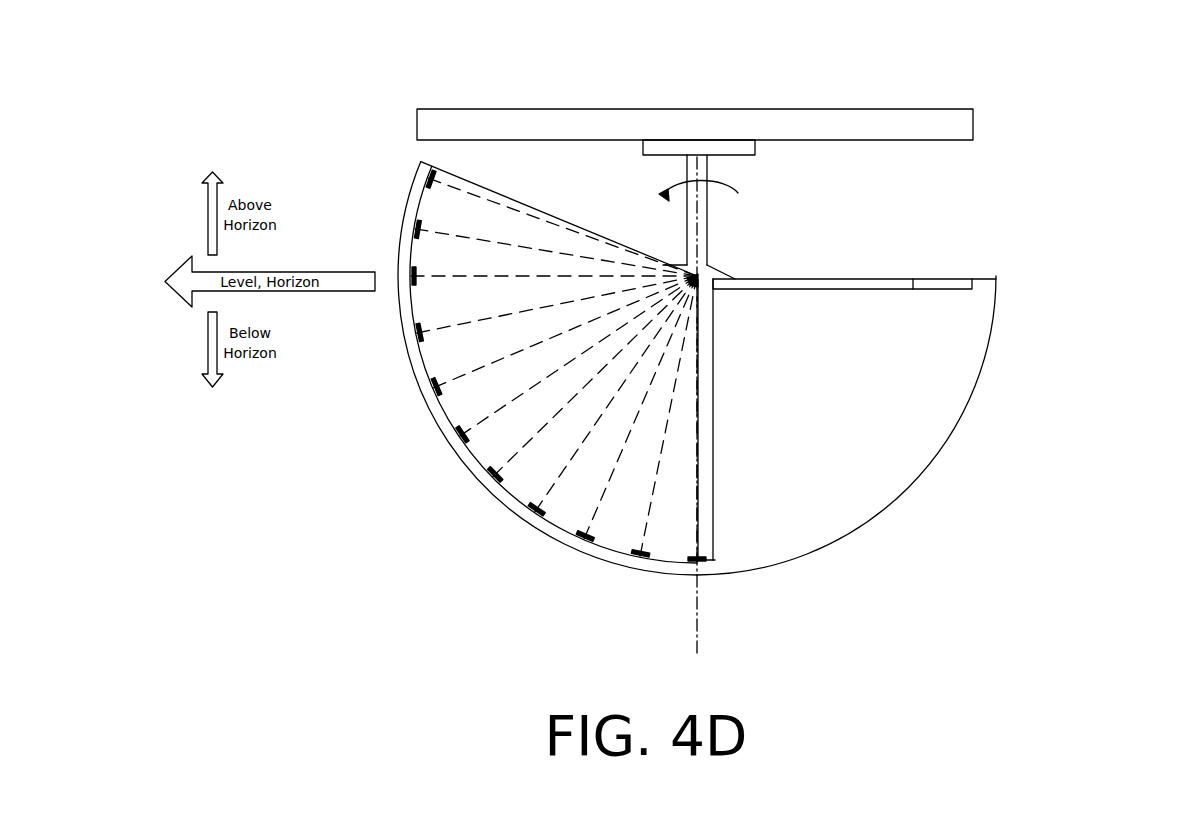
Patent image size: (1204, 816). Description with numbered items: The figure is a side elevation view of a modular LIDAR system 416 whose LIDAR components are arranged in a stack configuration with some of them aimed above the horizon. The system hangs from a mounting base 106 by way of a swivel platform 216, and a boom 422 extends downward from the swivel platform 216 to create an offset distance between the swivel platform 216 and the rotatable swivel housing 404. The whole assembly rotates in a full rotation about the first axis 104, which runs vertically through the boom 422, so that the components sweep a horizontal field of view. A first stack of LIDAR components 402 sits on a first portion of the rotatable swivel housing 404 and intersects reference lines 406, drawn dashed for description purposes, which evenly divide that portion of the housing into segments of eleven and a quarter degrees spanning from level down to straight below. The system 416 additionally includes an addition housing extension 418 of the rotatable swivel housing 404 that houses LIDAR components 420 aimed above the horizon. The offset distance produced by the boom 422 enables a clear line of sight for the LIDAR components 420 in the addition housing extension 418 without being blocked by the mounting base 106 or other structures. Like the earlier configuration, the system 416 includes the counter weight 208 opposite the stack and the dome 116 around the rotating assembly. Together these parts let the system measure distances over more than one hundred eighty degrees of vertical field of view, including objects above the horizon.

The mounting base 106 is at (450, 115).
The first axis 104 is at (695, 225).
The swivel platform 216 is at (755, 150).
The boom 422 is at (708, 213).
The modular LIDAR system 416 is at (1090, 88).
The addition housing extension 418 is at (390, 146).
The LIDAR components aimed above the horizon 420 is at (413, 225).
The LIDAR components 402 is at (490, 482).
The reference lines 406 is at (605, 490).
The rotatable swivel housing 404 is at (610, 548).
The dome 116 is at (997, 292).
The counter weight 208 is at (943, 289).